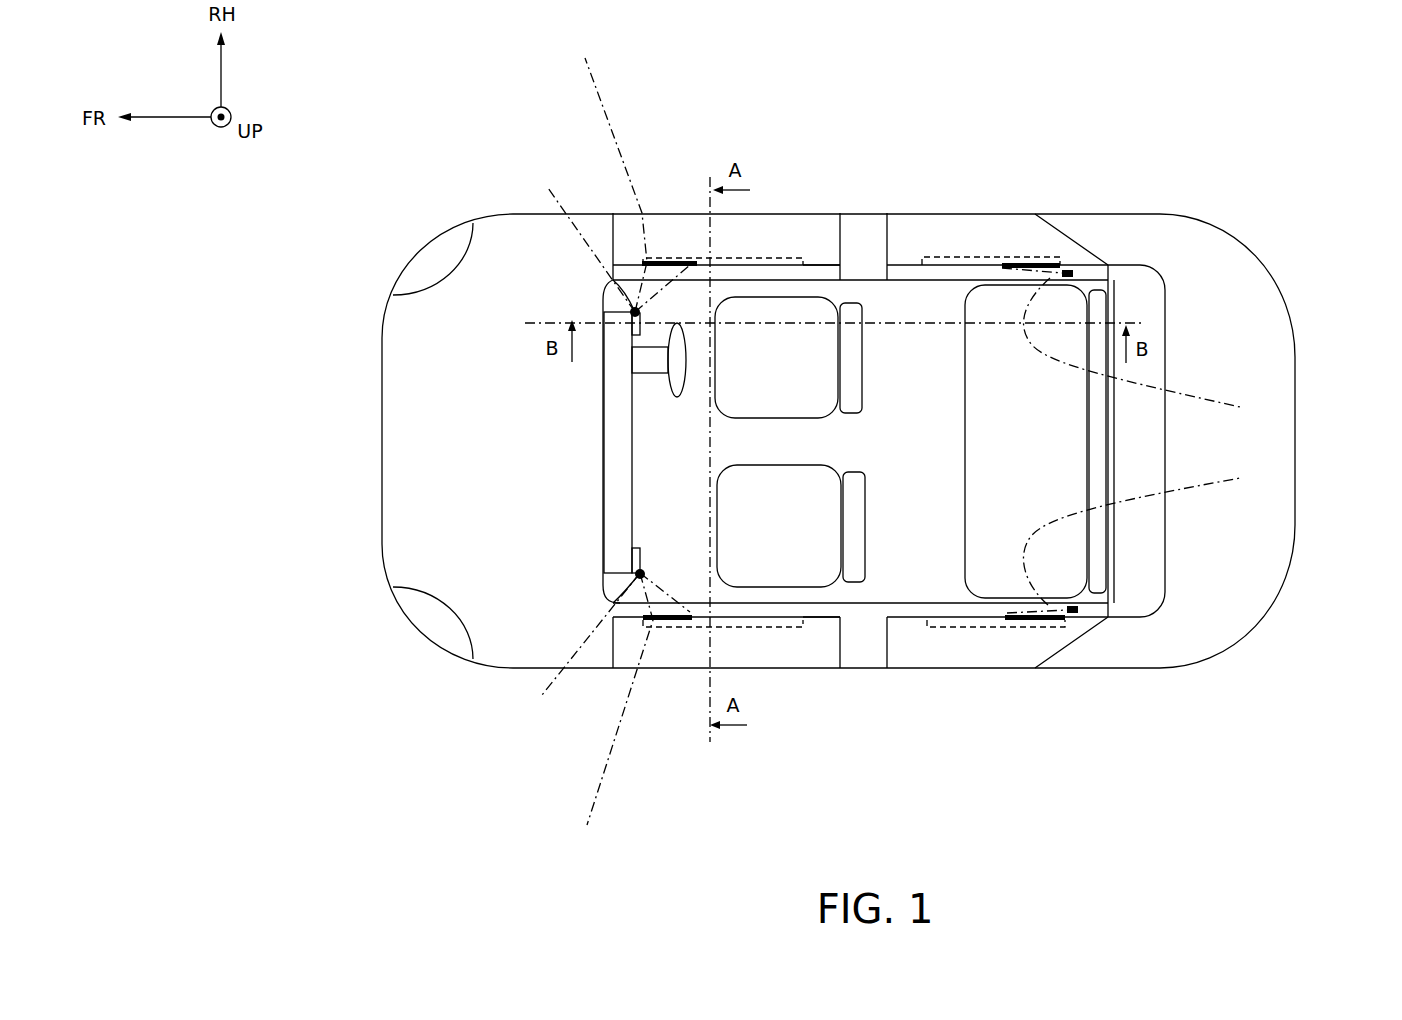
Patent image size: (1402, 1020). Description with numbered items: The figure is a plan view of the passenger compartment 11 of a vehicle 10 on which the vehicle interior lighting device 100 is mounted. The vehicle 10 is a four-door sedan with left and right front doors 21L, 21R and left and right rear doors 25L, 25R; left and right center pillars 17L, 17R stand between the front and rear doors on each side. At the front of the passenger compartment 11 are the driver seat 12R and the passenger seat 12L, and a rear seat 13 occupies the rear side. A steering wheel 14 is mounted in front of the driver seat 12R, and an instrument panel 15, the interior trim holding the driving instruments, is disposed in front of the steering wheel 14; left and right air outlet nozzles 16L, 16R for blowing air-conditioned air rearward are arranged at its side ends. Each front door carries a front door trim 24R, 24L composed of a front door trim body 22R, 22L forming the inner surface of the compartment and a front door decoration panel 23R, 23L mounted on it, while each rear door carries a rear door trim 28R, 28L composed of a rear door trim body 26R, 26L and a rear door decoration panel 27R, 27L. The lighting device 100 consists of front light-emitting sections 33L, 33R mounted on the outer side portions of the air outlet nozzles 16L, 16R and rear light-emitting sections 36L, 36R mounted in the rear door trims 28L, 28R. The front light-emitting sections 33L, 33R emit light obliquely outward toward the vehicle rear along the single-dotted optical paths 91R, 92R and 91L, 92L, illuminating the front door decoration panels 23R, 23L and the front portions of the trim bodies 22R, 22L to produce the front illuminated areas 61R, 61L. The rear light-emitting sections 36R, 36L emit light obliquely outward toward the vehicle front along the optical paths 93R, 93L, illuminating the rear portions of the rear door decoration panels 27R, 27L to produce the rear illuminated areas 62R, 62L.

The vehicle interior lighting device 100 is at (477, 143).
The vehicle 10 is at (382, 338).
The passenger compartment 11 is at (889, 447).
The driver seat 12R is at (765, 375).
The passenger seat 12L is at (765, 545).
The rear seat 13 is at (1011, 447).
The steering wheel 14 is at (676, 397).
The instrument panel 15 is at (632, 498).
The right air outlet nozzle 16R is at (632, 318).
The left air outlet nozzle 16L is at (632, 560).
The right center pillar 17R is at (860, 213).
The left center pillar 17L is at (863, 669).
The right front door 21R is at (690, 213).
The left front door 21L is at (682, 668).
The right front door trim body 22R is at (818, 263).
The left front door trim body 22L is at (815, 618).
The right front door decoration panel 23R is at (753, 258).
The left front door decoration panel 23L is at (757, 627).
The right front door trim 24R is at (767, 90).
The left front door trim 24L is at (770, 793).
The right rear door 25R is at (937, 213).
The left rear door 25L is at (940, 669).
The right rear door trim body 26R is at (1072, 263).
The left rear door trim body 26L is at (1082, 620).
The right rear door decoration panel 27R is at (1035, 258).
The left rear door decoration panel 27L is at (1043, 625).
The right rear door trim 28R is at (1055, 98).
The left rear door trim 28L is at (1067, 786).
The right front light-emitting section 33R is at (635, 312).
The left front light-emitting section 33L is at (640, 573).
The right rear light-emitting section 36R is at (1072, 272).
The left rear light-emitting section 36L is at (1077, 610).
The right front illuminated area 61R is at (670, 262).
The left front illuminated area 61L is at (668, 620).
The right rear illuminated area 62R is at (1012, 263).
The left rear illuminated area 62L is at (1020, 618).
The optical path 91R is at (578, 236).
The optical path 91L is at (585, 647).
The optical path 92R is at (628, 173).
The optical path 92L is at (630, 713).
The optical path 93R is at (1154, 347).
The optical path 93L is at (1152, 537).